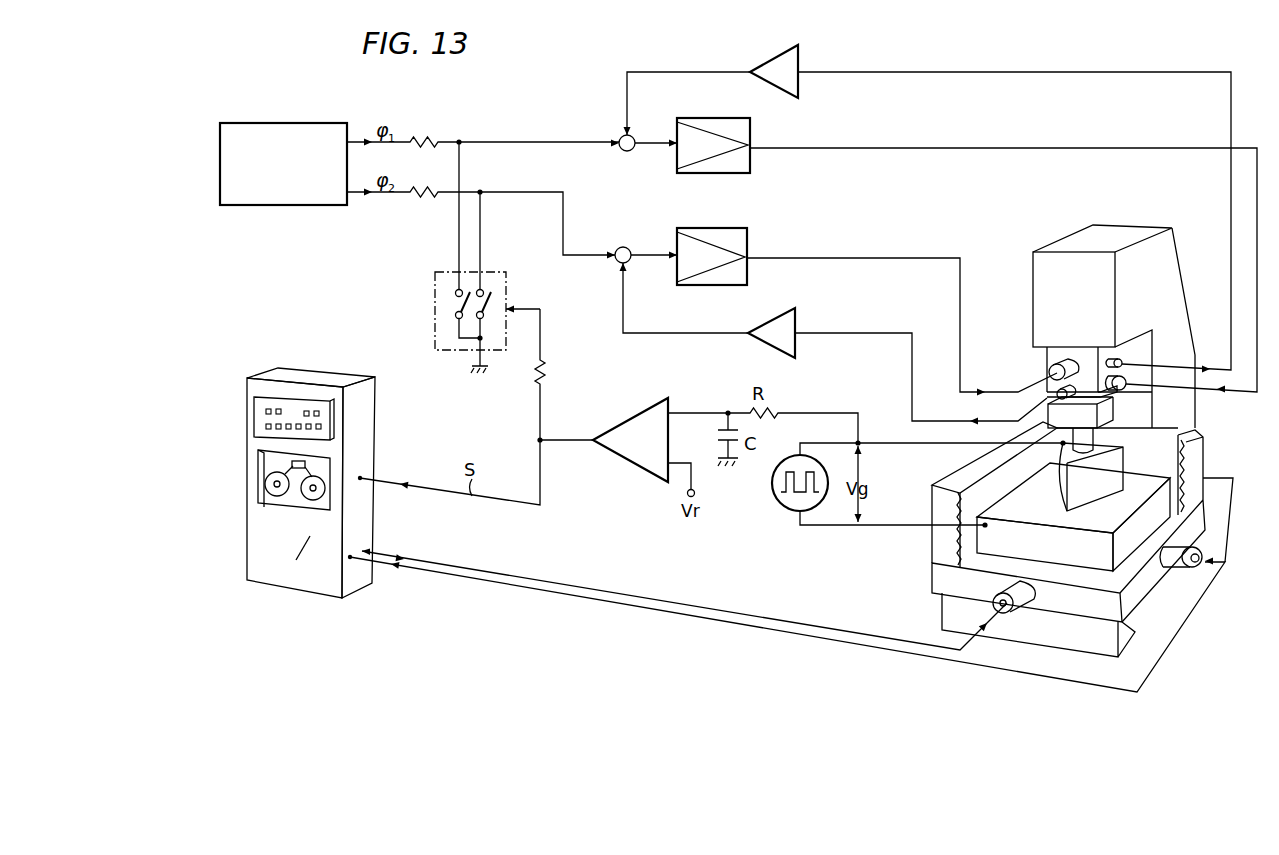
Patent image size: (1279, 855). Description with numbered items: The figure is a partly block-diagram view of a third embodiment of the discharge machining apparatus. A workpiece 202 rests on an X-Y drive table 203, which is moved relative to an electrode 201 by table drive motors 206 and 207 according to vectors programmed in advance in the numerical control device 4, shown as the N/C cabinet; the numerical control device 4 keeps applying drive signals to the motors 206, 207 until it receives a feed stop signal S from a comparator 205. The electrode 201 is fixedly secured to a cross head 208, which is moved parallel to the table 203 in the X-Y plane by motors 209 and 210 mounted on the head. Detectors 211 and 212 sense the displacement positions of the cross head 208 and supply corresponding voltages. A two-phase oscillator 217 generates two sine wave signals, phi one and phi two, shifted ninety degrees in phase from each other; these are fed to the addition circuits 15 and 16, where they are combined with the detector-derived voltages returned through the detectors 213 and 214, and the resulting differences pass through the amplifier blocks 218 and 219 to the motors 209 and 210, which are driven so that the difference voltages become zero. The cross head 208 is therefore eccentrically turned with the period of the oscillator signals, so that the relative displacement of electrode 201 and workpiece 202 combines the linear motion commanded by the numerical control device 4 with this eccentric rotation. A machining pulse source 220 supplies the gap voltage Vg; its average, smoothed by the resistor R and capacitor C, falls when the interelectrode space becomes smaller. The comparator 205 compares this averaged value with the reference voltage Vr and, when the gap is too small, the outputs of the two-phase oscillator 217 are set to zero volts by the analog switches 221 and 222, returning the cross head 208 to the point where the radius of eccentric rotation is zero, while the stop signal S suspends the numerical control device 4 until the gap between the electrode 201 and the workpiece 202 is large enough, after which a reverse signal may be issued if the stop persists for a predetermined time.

The two-phase oscillator 217 is at (313, 123).
The adder (summing point) 15 is at (628, 160).
The adder (summing point) 16 is at (622, 244).
The amplifier 218 is at (752, 164).
The amplifier 219 is at (751, 243).
The detector 213 is at (778, 55).
The detector 214 is at (797, 319).
The comparator 205 is at (639, 418).
The machining pulse source 220 is at (788, 510).
The analog switch 221 is at (435, 286).
The analog switch 222 is at (494, 303).
The numerical controller 4 is at (250, 522).
The motor 210 is at (1063, 363).
The detector 212 is at (1068, 389).
The detector 211 is at (1122, 360).
The motor 209 is at (1126, 387).
The cross head 208 is at (1103, 425).
The electrode 201 is at (1093, 486).
The workpiece 202 is at (1030, 497).
The X-Y drive table 203 is at (935, 578).
The table drive motor 207 is at (1010, 613).
The table drive motor 206 is at (1200, 550).